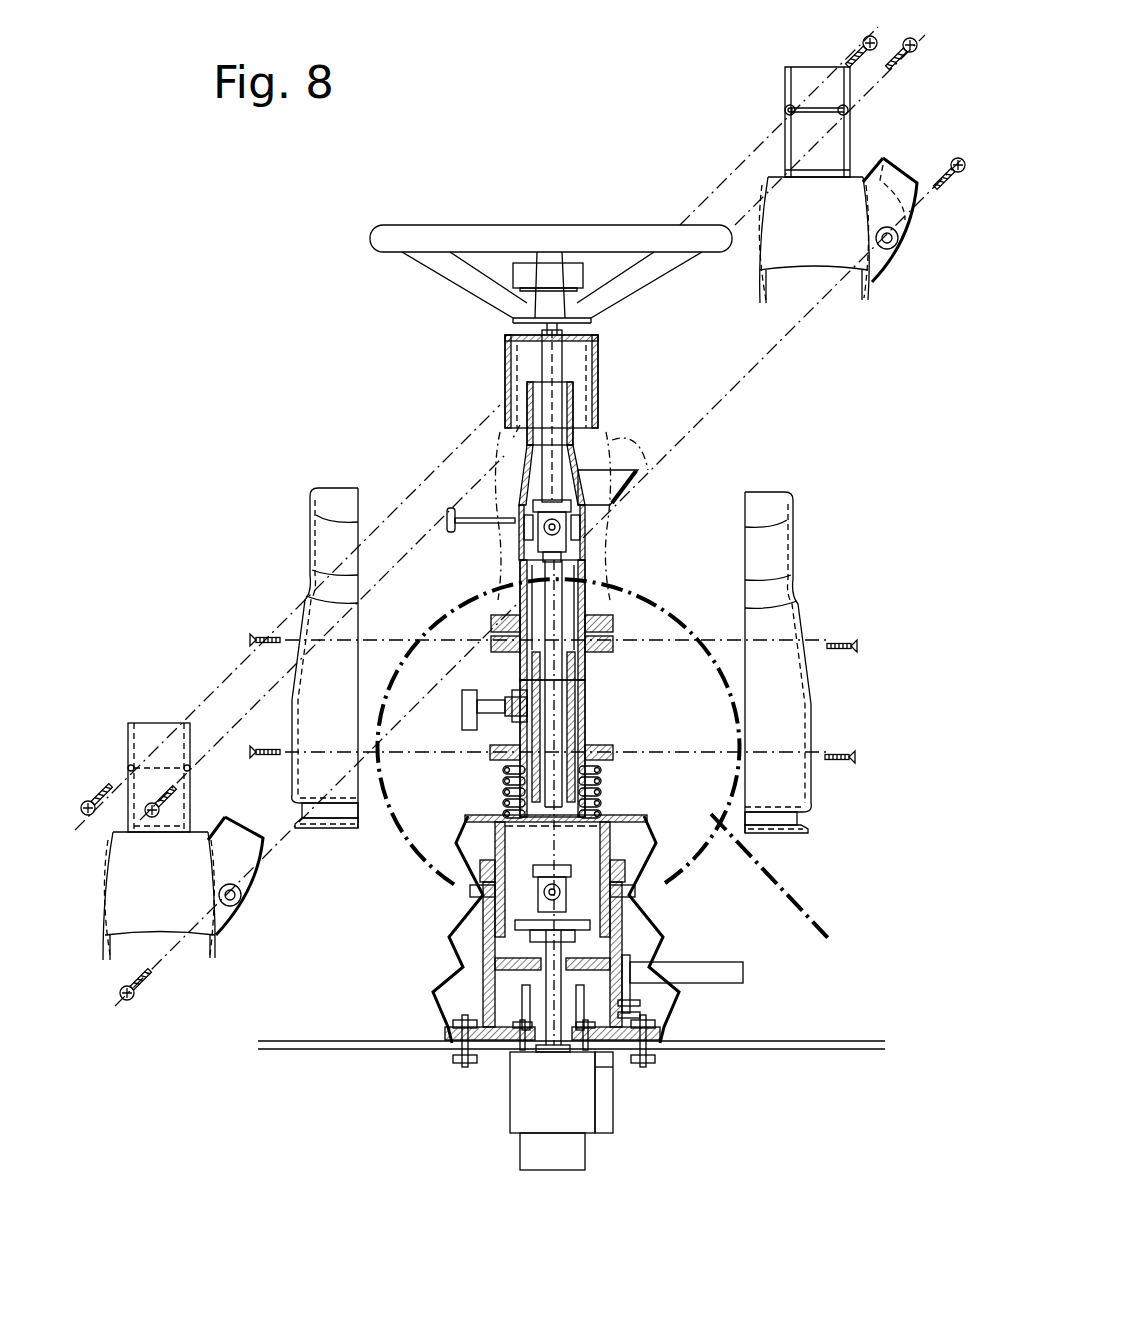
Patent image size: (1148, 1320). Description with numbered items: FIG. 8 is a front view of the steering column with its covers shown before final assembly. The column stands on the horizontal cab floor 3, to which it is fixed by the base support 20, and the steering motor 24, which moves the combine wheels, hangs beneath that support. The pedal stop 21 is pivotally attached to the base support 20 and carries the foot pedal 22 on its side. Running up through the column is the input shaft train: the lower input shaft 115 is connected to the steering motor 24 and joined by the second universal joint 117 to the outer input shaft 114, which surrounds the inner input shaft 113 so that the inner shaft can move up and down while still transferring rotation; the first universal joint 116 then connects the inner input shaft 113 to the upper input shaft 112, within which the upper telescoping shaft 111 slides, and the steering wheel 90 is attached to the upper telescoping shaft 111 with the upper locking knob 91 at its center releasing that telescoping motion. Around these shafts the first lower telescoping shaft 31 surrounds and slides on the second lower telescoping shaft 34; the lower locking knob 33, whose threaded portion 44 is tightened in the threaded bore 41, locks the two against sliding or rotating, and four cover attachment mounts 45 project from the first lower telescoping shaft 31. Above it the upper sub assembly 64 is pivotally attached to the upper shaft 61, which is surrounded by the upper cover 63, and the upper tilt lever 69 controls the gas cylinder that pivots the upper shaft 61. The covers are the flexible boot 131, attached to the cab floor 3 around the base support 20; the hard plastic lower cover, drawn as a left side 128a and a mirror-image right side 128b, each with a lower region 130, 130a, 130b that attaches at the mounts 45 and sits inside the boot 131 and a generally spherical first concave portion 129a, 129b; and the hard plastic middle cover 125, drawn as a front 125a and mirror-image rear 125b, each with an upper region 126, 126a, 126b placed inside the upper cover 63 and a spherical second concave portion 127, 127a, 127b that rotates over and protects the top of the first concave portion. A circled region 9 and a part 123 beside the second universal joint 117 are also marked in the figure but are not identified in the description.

The horizontal cab floor 3 is at (815, 1040).
The section line 9 is at (618, 778).
The base support 20 is at (622, 948).
The pedal stop 21 is at (640, 1002).
The foot pedal 22 is at (722, 978).
The steering motor 24 is at (570, 1104).
The first lower telescoping shaft 31 is at (585, 718).
The lower locking knob 33 is at (465, 712).
The second lower telescoping shaft 34 is at (597, 797).
The threaded bore 41 is at (515, 720).
The threaded portion 44 is at (515, 688).
The cover attachment mounts 45 is at (495, 632).
The upper shaft 61 is at (575, 405).
The upper cover 63 is at (508, 385).
The upper sub assembly 64 is at (570, 580).
The upper tilt lever 69 is at (470, 510).
The steering wheel 90 is at (450, 230).
The upper locking knob 91 is at (585, 265).
The upper telescoping shaft 111 is at (598, 352).
The upper input shaft 112 is at (578, 462).
The inner input shaft 113 is at (555, 597).
The outer input shaft 114 is at (572, 690).
The lower input shaft 115 is at (540, 1020).
The first universal joint 116 is at (580, 522).
The second universal joint 117 is at (555, 905).
The plate 123 is at (612, 926).
The middle cover 125 is at (812, 178).
The front of middle cover 125a is at (748, 136).
The rear of middle cover 125b is at (211, 849).
The upper region 126 is at (785, 60).
The upper region of front middle cover 126a is at (790, 105).
The upper region of rear middle cover 126b is at (122, 718).
The second concave portion 127 is at (845, 255).
The second concave portion of front middle cover 127a is at (815, 265).
The second concave portion of rear middle cover 127b is at (155, 910).
The left-side lower cover 128a is at (812, 602).
The right-side lower cover 128b is at (283, 590).
The first concave portion 129a is at (793, 540).
The first concave portion 129b is at (312, 530).
The lower region 130 is at (318, 762).
The lower region of left lower cover 130a is at (790, 720).
The lower region of right lower cover 130b is at (300, 700).
The flexible boot 131 is at (470, 880).